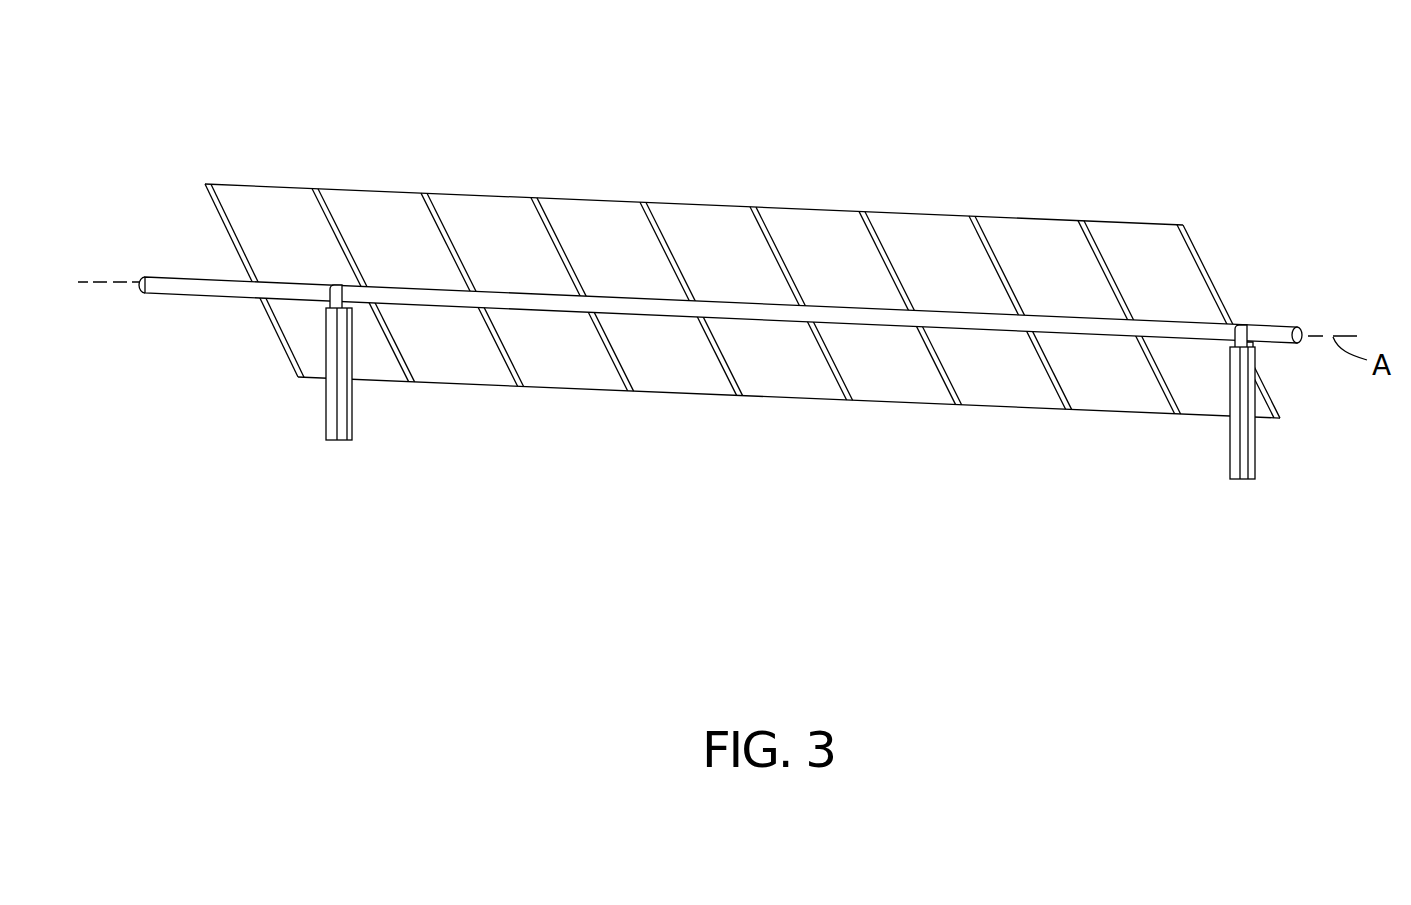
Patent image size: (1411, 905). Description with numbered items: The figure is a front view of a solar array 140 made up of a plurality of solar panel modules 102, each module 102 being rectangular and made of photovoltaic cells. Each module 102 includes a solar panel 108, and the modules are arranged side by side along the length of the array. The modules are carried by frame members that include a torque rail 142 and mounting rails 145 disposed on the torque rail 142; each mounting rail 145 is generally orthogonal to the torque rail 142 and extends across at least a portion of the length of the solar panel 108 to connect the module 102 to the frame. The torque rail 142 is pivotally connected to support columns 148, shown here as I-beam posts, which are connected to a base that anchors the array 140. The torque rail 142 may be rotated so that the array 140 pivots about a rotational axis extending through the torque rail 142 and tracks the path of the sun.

The solar array 140 is at (717, 306).
The solar panel module 102 is at (345, 189).
The solar panel 108 is at (590, 233).
The mounting rail 145 is at (417, 194).
The torque rail 142 is at (945, 318).
The support column 148 is at (348, 430).